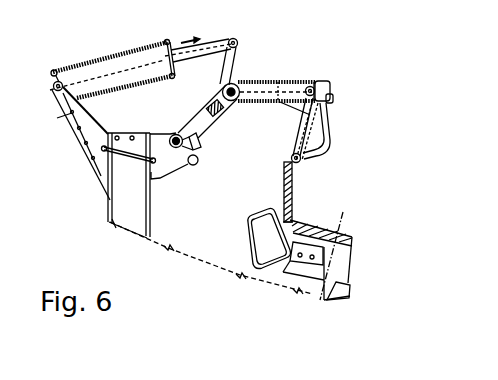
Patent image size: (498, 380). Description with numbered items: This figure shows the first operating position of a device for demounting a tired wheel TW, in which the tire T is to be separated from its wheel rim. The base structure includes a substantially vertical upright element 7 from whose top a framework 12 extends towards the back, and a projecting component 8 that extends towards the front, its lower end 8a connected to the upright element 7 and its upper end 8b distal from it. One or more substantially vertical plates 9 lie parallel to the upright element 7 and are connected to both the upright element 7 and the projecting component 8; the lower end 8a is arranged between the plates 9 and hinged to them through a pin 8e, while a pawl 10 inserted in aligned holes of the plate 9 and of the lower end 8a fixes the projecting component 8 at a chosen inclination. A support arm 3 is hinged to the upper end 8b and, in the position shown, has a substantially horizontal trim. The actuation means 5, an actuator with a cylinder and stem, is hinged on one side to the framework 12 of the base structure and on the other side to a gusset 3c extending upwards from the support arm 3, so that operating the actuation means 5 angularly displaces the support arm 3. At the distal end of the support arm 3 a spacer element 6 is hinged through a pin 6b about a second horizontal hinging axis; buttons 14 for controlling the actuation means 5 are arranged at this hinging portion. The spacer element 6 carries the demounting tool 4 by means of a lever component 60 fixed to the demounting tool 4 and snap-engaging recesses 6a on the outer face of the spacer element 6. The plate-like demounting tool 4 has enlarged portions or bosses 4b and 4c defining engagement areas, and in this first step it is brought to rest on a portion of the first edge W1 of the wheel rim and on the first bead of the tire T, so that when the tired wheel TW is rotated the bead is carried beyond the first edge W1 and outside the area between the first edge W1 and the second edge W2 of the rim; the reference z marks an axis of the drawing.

The actuation means 5 is at (120, 60).
The framework 12 is at (87, 145).
The upright element 7 is at (122, 197).
The plate 9 is at (160, 177).
The pawl 10 is at (193, 166).
The projecting component 8 is at (203, 131).
The lower end of the projecting component 8a is at (184, 117).
The upper end of the projecting component 8b is at (233, 39).
The pin 8e is at (174, 134).
The support arm 3 is at (273, 83).
The gusset 3c is at (260, 81).
The spacer element 6 is at (296, 121).
The recesses 6a is at (292, 153).
The pin 6b is at (312, 86).
The buttons 14 is at (333, 97).
The lever component 60 is at (304, 157).
The demounting tool 4 is at (283, 182).
The boss 4b is at (283, 221).
The boss 4c is at (269, 238).
The tire T is at (248, 221).
The first edge of the wheel rim W1 is at (293, 226).
The second edge of the wheel rim W2 is at (266, 314).
The tired wheel TW is at (250, 258).
The z axis z is at (329, 259).